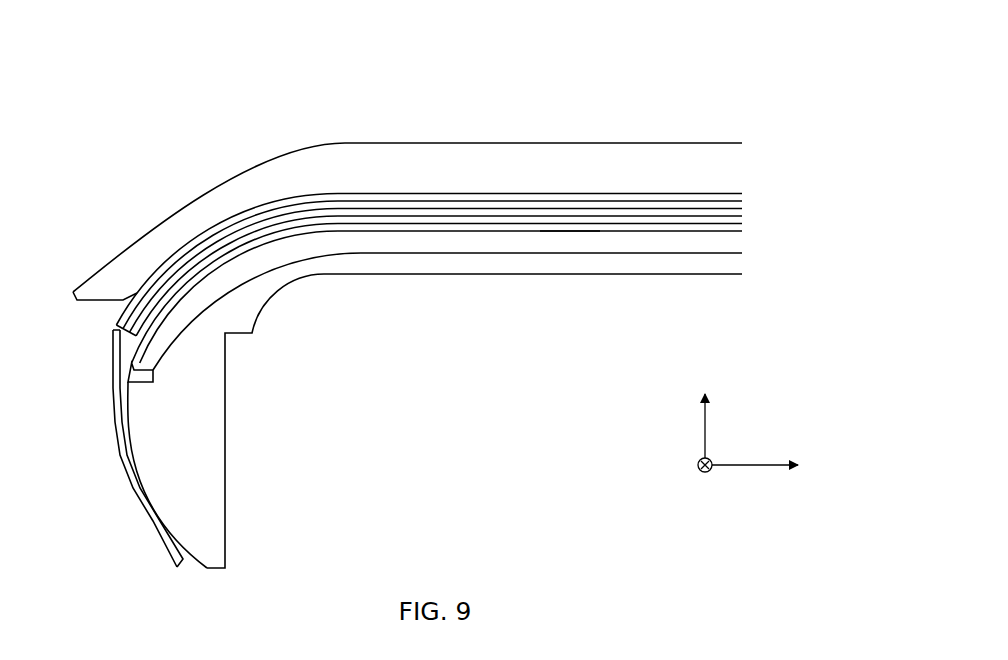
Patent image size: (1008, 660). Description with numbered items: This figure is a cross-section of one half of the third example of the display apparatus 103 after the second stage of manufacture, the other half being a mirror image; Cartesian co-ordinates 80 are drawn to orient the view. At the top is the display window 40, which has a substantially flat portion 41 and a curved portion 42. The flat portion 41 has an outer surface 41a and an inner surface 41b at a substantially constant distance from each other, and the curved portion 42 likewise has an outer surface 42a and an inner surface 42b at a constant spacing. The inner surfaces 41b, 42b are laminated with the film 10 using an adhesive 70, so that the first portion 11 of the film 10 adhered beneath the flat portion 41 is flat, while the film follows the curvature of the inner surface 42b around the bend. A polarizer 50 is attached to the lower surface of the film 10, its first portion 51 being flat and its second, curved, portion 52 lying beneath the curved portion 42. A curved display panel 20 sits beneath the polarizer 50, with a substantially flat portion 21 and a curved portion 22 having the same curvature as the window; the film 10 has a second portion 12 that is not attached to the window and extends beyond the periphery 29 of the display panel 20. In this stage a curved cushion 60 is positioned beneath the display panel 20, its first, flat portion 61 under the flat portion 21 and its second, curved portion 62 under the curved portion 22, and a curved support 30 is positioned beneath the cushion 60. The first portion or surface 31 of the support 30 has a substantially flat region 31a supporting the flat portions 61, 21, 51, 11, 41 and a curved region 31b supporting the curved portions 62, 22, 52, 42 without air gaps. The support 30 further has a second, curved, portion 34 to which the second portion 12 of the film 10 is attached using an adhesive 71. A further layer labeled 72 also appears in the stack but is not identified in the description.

The film 10 is at (683, 201).
The first portion of the film 11 is at (580, 208).
The second portion of the film 12 is at (113, 426).
The display panel 20 is at (742, 228).
The substantially flat portion of the display panel 21 is at (630, 233).
The curved portion of the display panel 22 is at (275, 245).
The periphery of the display panel 29 is at (134, 371).
The curved support 30 is at (742, 265).
The first portion/surface of the curved support 31 is at (510, 254).
The substantially flat region of the first portion 31a is at (458, 254).
The curved region of the first portion 31b is at (237, 282).
The second, curved, portion of the support 34 is at (125, 454).
The display window 40 is at (592, 99).
The substantially flat portion of the display window 41 is at (490, 143).
The outer surface of the substantially flat portion 41a is at (445, 143).
The inner surface of the substantially flat portion 41b is at (427, 191).
The curved portion of the display window 42 is at (164, 156).
The outer surface of the curved portion 42a is at (118, 227).
The inner surface of the curved portion 42b is at (170, 243).
The polarizer 50 is at (668, 218).
The first portion of the polarizer 51 is at (593, 220).
The second, curved, portion of the polarizer 52 is at (260, 221).
The cushion 60 is at (735, 246).
The first portion of the cushion 61 is at (563, 233).
The second, curved, portion of the cushion 62 is at (193, 287).
The adhesive 70 is at (623, 193).
The adhesive 71 is at (134, 503).
The protective film portion 72 is at (745, 213).
The Cartesian co-ordinates 80 is at (743, 492).
The display apparatus 103 is at (432, 428).